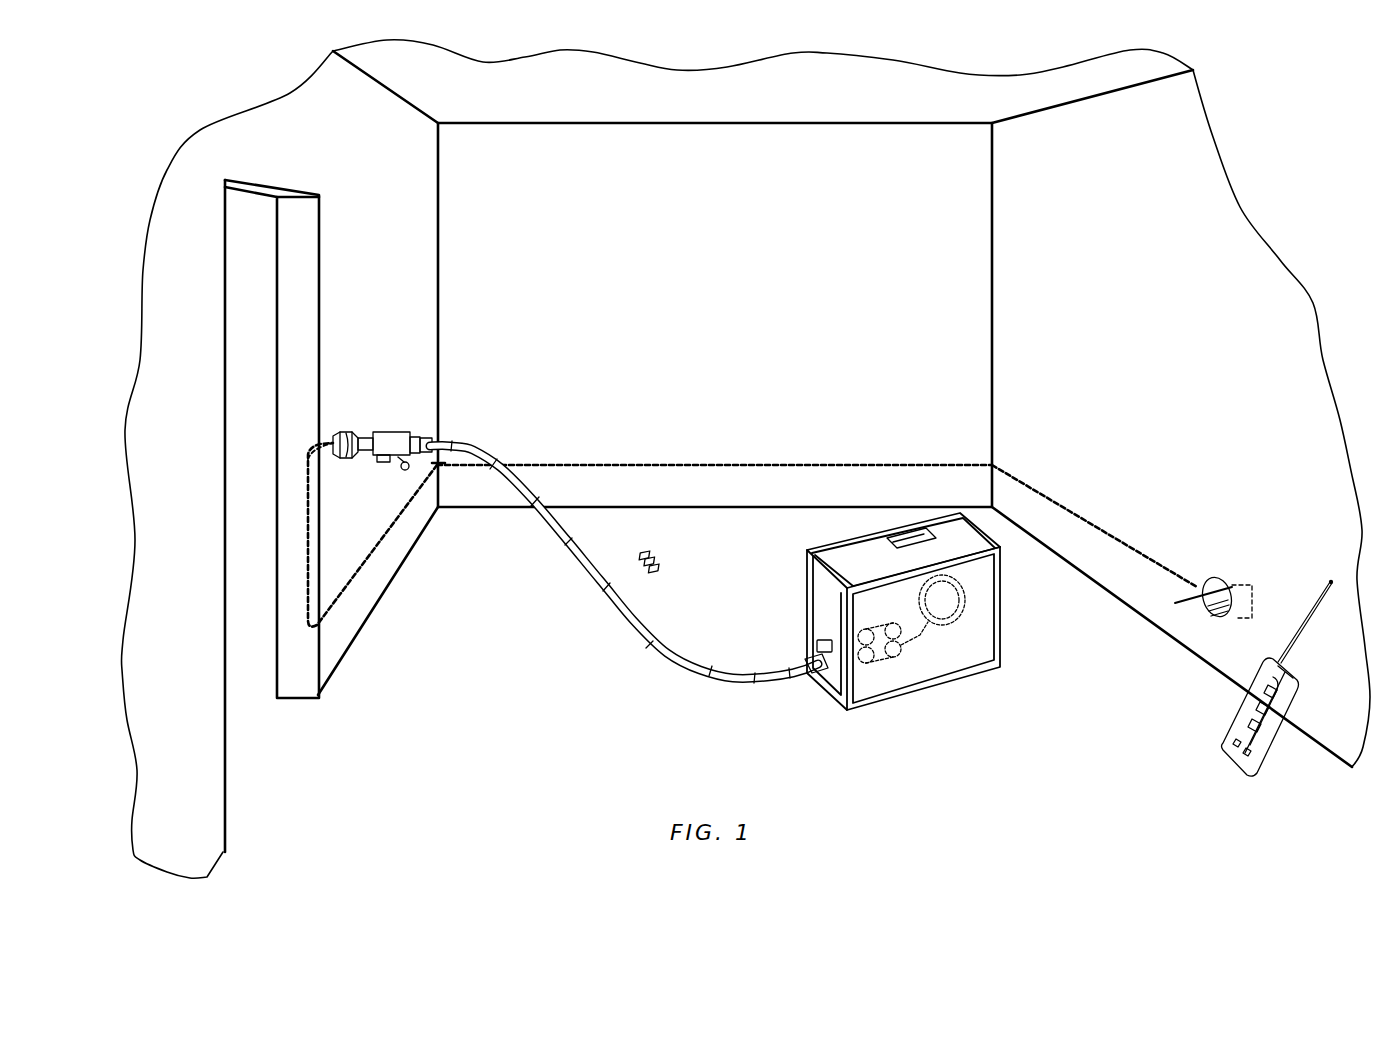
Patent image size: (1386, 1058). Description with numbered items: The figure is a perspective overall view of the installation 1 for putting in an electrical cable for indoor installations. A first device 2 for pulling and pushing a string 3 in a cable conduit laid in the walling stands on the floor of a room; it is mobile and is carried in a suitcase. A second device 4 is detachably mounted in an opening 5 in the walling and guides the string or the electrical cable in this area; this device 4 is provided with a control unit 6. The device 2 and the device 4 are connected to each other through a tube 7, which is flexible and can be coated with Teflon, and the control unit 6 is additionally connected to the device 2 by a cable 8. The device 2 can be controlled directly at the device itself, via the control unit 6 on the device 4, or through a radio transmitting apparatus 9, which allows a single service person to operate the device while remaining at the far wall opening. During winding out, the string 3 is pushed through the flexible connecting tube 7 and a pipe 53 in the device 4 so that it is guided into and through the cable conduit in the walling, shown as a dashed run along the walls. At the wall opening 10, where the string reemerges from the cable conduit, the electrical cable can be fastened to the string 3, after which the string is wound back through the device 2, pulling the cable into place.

The installation 1 is at (725, 685).
The first device 2 is at (1007, 625).
The string 3 is at (732, 463).
The second device 4 is at (394, 428).
The opening 5 is at (338, 430).
The control unit 6 is at (407, 430).
The pipe 53 is at (428, 435).
The tube 7 is at (637, 612).
The cable 8 is at (817, 645).
The radio transmitting apparatus 9 is at (1223, 742).
The wall opening 10 is at (1213, 577).